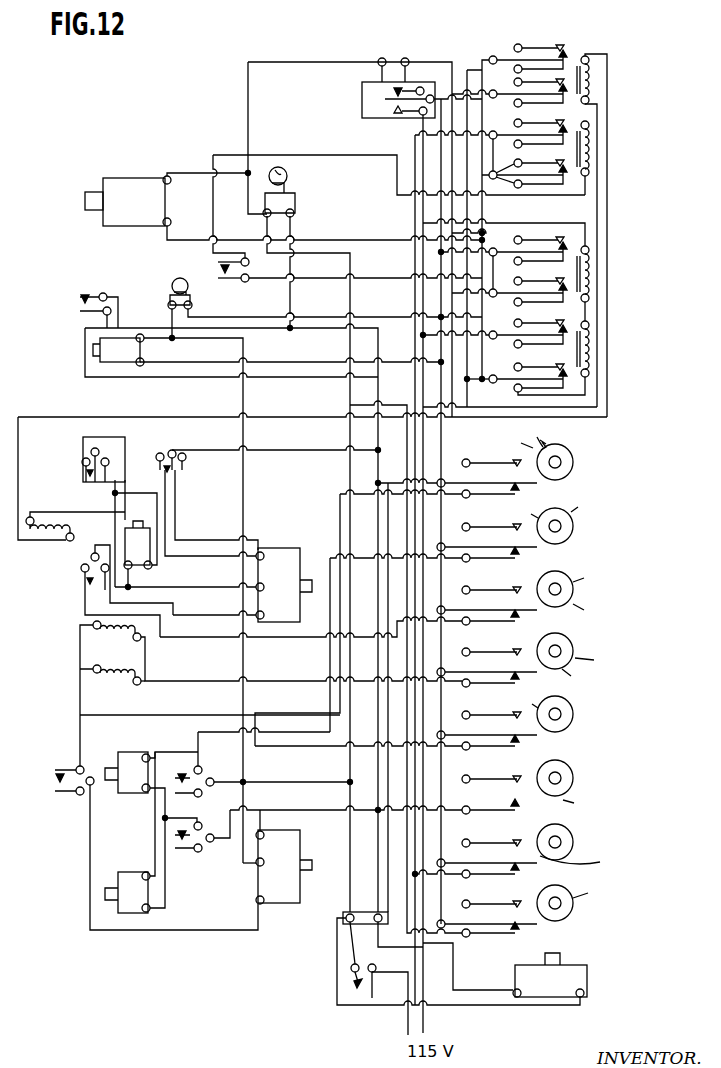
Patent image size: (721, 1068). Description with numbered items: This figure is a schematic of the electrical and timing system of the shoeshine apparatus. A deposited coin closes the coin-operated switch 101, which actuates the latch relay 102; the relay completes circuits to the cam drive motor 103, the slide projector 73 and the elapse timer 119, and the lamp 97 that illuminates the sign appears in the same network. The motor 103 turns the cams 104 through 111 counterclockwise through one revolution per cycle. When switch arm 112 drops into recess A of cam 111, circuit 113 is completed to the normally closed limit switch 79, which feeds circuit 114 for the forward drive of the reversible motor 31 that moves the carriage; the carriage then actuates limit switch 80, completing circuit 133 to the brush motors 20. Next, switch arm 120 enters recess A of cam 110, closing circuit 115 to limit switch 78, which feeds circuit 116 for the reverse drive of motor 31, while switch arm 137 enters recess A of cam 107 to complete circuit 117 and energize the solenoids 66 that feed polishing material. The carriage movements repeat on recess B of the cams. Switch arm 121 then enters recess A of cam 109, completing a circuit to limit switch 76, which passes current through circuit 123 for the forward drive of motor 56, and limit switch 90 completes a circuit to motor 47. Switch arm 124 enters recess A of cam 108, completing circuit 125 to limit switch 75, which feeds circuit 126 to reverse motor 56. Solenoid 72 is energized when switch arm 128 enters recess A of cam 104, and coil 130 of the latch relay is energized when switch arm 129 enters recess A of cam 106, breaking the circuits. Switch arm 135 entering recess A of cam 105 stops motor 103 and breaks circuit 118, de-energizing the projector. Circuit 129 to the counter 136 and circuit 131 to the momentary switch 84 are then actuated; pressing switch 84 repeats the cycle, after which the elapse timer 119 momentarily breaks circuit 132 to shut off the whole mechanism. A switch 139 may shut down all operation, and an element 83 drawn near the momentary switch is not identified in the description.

The elapse timer 119 is at (409, 58).
The coil 130 is at (608, 80).
The circuit 132 is at (419, 130).
The slide projector 73 is at (120, 208).
The lamp 97 is at (287, 172).
The circuit 118 is at (348, 236).
The coin-operated switch 101 is at (81, 295).
The momentary switch 84 is at (219, 270).
The lamp 83 is at (172, 294).
The circuit 131 is at (272, 280).
The counter 136 is at (93, 347).
The switch arm 129 is at (166, 361).
The latch relay 102 is at (590, 368).
The limit switch 75 is at (95, 448).
The limit switch 90 is at (172, 450).
The solenoid 72 is at (68, 541).
The limit switch 76 is at (95, 553).
The motor 47 is at (148, 565).
The circuit 125 is at (177, 517).
The circuit 126 is at (189, 560).
The circuit 123 is at (190, 622).
The motor 56 is at (296, 554).
The circuit 113 is at (340, 508).
The solenoids 66 is at (106, 639).
The circuit 117 is at (145, 663).
The cam 111 is at (576, 460).
The switch arm 112 is at (537, 484).
The cam 110 is at (578, 527).
The switch arm 120 is at (540, 548).
The circuit 115 is at (198, 743).
The cam 109 is at (580, 594).
The switch arm 121 is at (540, 615).
The cam 108 is at (567, 644).
The switch arm 124 is at (540, 680).
The cam 107 is at (572, 718).
The switch arm 137 is at (535, 735).
The cam 106 is at (573, 778).
The cam 105 is at (573, 842).
The switch arm 135 is at (535, 862).
The cam 104 is at (575, 913).
The switch arm 128 is at (535, 922).
The limit switch 79 is at (52, 778).
The motors 20 is at (127, 750).
The limit switch 78 is at (211, 781).
The limit switch 80 is at (204, 845).
The circuit 116 is at (265, 813).
The circuit 133 is at (172, 900).
The reversible motor 31 is at (301, 884).
The circuit 114 is at (235, 932).
The switch 139 is at (363, 993).
The cam drive motor 103 is at (588, 971).